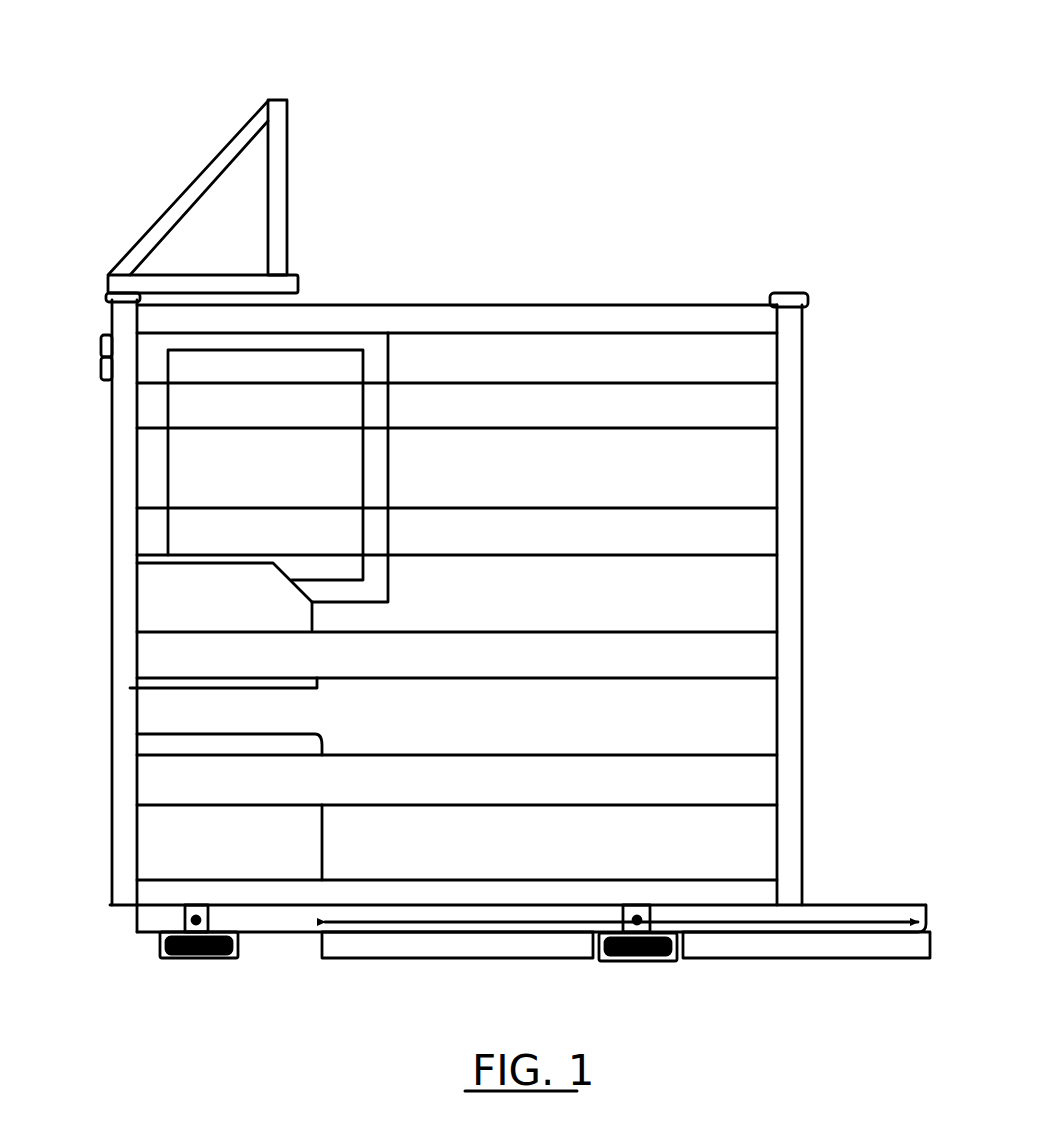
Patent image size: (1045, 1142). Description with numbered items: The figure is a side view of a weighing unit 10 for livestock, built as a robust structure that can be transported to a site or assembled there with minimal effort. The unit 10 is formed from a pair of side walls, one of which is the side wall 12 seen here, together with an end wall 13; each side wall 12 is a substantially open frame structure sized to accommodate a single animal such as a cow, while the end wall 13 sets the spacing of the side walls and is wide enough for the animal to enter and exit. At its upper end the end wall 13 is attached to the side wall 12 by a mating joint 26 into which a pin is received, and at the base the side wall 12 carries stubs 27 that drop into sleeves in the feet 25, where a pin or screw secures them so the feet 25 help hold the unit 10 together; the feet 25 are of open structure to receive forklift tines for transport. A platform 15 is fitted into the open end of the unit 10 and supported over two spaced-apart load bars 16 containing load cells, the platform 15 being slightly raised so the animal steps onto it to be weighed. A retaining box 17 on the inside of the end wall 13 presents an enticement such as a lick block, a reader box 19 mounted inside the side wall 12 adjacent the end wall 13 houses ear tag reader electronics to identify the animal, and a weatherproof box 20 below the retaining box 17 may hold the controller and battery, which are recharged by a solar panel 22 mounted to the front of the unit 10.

The weighing unit 10 is at (700, 145).
The side wall 12 is at (766, 532).
The end wall 13 is at (104, 670).
The platform 15 is at (837, 917).
The load bars 16 is at (446, 960).
The retaining box 17 is at (258, 628).
The reader box 19 is at (276, 475).
The weatherproof box 20 is at (240, 858).
The solar panel 22 is at (202, 145).
The feet 25 is at (195, 962).
The mating joint 26 is at (90, 374).
The stubs 27 is at (176, 914).